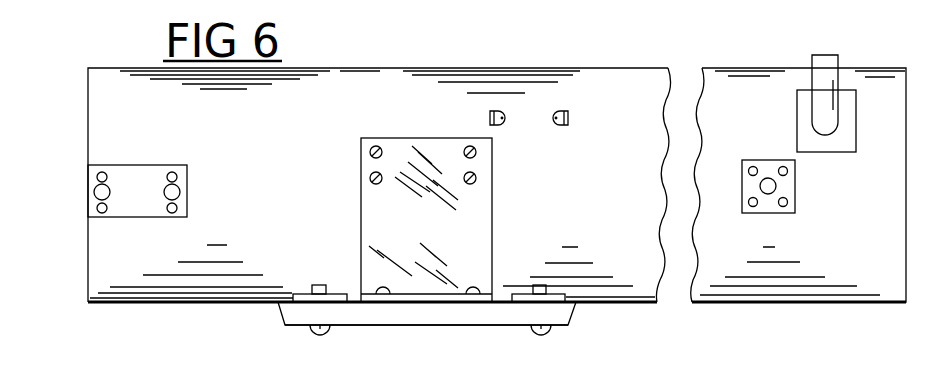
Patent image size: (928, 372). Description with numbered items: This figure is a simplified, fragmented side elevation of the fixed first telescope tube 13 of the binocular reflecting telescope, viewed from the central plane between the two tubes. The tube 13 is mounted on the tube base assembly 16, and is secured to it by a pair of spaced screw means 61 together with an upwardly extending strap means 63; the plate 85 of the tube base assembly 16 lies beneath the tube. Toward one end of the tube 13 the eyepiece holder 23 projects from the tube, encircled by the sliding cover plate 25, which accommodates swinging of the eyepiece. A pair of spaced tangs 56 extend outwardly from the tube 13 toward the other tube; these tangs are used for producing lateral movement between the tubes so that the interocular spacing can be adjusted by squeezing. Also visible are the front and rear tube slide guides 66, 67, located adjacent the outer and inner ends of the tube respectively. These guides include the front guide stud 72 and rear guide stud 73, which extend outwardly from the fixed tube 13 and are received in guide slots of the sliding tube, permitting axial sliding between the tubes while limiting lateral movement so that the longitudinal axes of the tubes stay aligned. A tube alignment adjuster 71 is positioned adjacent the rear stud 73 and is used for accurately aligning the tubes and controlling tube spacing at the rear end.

The first telescope tube 13 is at (381, 103).
The tube base assembly 16 is at (280, 321).
The eyepiece holder 23 is at (822, 75).
The sliding cover plate 25 is at (823, 145).
The tangs 56 is at (557, 110).
The screw means 61 is at (327, 331).
The strap means 63 is at (450, 214).
The front tube slide guide 66 is at (799, 200).
The rear tube slide guide 67 is at (137, 165).
The tube alignment adjuster 71 is at (188, 196).
The front guide stud 72 is at (765, 192).
The rear guide stud 73 is at (107, 190).
The plate 85 is at (424, 308).